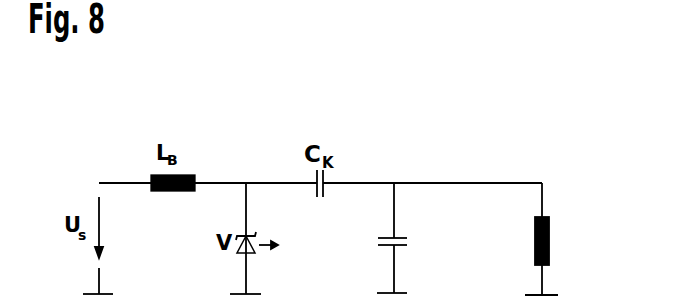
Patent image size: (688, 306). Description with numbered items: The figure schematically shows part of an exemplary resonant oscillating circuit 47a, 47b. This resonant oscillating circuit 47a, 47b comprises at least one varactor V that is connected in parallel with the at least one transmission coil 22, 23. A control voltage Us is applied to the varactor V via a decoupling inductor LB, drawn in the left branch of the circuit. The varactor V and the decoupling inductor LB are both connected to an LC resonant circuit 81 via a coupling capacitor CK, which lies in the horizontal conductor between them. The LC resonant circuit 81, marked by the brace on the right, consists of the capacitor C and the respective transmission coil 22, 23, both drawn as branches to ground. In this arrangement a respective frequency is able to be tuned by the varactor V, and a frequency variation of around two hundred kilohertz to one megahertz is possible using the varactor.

The resonant oscillating circuit 47a is at (208, 136).
The resonant oscillating circuit 47b is at (208, 106).
The LC resonant circuit 81 is at (545, 140).
The transmission coil 22 is at (566, 239).
The transmission coil 23 is at (566, 239).